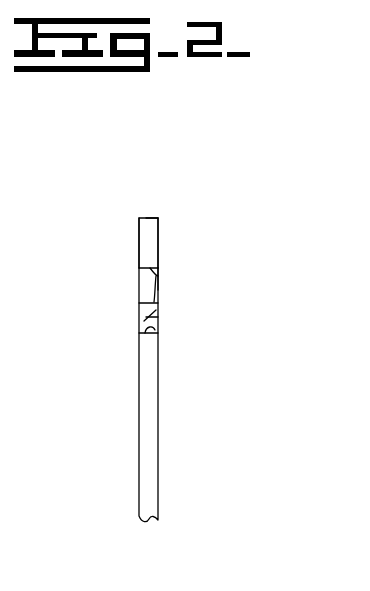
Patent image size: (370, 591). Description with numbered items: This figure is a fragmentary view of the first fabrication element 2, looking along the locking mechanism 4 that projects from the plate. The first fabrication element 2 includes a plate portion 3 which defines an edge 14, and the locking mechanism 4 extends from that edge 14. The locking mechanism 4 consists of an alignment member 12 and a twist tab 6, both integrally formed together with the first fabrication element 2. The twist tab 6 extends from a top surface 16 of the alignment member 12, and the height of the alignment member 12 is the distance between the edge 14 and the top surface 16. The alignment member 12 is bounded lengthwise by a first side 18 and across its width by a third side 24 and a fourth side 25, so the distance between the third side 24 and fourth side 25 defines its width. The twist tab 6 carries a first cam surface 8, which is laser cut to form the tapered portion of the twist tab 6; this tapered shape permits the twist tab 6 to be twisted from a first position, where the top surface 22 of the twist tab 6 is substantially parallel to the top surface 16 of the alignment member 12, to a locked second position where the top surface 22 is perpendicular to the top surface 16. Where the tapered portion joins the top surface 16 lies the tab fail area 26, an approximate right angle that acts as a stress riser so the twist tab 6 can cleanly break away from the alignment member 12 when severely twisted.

The first fabrication element 2 is at (188, 145).
The plate portion 3 is at (146, 363).
The locking mechanism 4 is at (71, 158).
The twist tab 6 is at (152, 237).
The first cam surface 8 is at (158, 270).
The alignment member 12 is at (146, 320).
The edge 14 is at (155, 327).
The top surface 16 is at (158, 285).
The first side 18 is at (158, 305).
The top surface 22 is at (152, 218).
The third side 24 is at (138, 327).
The fourth side 25 is at (158, 317).
The tab fail area 26 is at (140, 303).